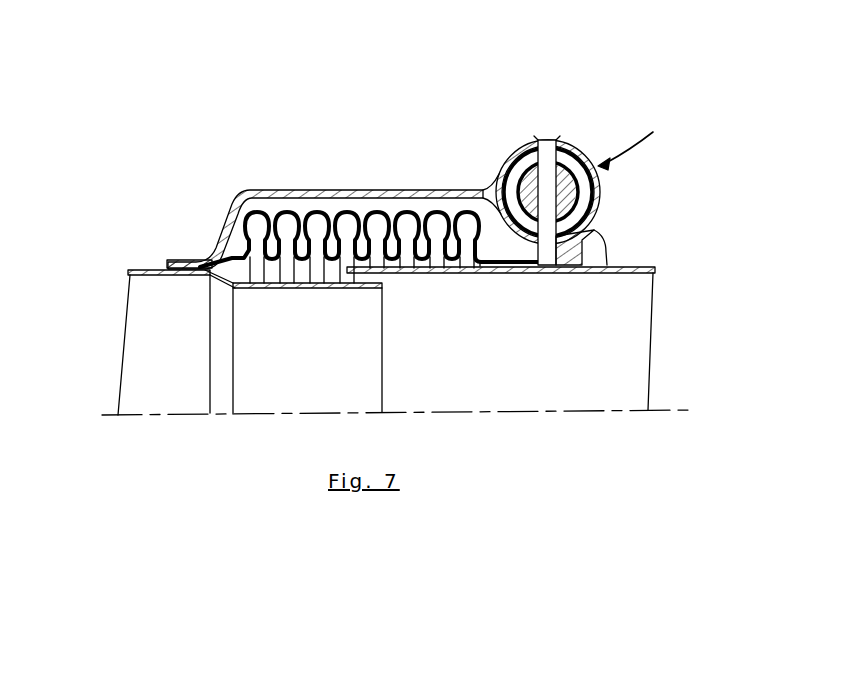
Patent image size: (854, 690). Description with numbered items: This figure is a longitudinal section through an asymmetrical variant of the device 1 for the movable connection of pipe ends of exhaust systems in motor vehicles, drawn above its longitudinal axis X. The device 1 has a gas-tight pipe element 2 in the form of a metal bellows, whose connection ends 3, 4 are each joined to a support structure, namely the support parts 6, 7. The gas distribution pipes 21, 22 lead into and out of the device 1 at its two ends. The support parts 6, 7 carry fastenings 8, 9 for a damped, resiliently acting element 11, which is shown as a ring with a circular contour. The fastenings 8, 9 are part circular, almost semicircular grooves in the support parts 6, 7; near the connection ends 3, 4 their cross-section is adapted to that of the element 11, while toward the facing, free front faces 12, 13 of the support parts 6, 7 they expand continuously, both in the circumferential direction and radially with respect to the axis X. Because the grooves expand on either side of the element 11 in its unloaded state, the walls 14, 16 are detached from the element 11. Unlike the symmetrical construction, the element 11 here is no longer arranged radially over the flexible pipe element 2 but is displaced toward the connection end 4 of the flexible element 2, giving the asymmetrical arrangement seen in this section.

The device 1 is at (105, 436).
The gas-tight pipe element 2 is at (352, 212).
The connection end 3 is at (158, 266).
The connection end 4 is at (605, 262).
The support part 6 is at (290, 192).
The support part 7 is at (634, 145).
The fastening 8 is at (522, 157).
The fastening 9 is at (592, 232).
The damped, resiliently acting element 11 is at (566, 160).
The free front face 12 is at (542, 136).
The free front face 13 is at (550, 140).
The wall 14 is at (558, 146).
The wall 16 is at (567, 208).
The gas distribution pipe 21 is at (158, 276).
The gas distribution pipe 22 is at (627, 274).
The axis X is at (670, 410).